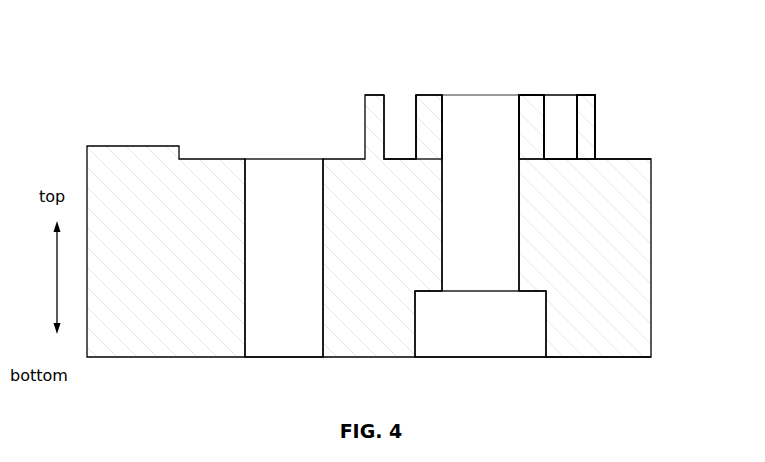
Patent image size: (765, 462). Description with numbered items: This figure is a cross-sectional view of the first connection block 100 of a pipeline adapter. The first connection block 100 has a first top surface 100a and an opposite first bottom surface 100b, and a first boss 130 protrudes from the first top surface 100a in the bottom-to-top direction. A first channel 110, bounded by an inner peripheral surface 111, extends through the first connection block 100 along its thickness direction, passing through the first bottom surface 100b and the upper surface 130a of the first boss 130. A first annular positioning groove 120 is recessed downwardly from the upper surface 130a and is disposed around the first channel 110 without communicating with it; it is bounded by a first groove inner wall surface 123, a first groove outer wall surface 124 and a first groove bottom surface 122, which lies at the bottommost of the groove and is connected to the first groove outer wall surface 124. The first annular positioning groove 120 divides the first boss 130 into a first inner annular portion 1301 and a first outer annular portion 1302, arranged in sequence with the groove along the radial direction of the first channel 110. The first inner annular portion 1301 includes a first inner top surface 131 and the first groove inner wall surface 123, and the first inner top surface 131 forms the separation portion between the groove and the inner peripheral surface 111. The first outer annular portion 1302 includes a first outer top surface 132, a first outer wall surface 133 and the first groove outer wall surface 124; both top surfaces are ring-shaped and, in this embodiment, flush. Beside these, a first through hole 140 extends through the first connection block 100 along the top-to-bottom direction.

The first connection block 100 is at (200, 55).
The first top surface 100a is at (643, 159).
The first bottom surface 100b is at (630, 357).
The first channel 110 is at (488, 247).
The inner peripheral surface 111 is at (443, 240).
The first annular positioning groove 120 is at (395, 115).
The first groove bottom surface 122 is at (597, 158).
The first groove inner wall surface 123 is at (418, 113).
The first groove outer wall surface 124 is at (577, 122).
The first boss 130 is at (590, 128).
The upper surface 130a is at (369, 95).
The first inner annular portion 1301 is at (530, 115).
The first outer annular portion 1302 is at (597, 93).
The first inner top surface 131 is at (527, 95).
The first outer top surface 132 is at (585, 105).
The first outer wall surface 133 is at (595, 130).
The first through hole 140 is at (277, 298).